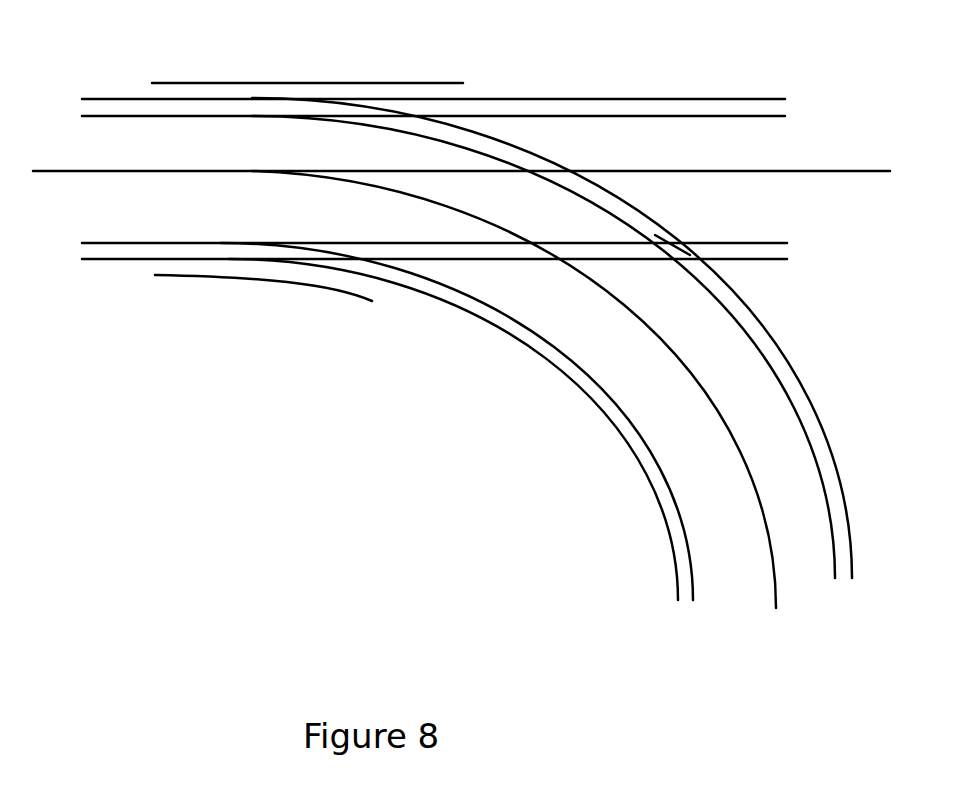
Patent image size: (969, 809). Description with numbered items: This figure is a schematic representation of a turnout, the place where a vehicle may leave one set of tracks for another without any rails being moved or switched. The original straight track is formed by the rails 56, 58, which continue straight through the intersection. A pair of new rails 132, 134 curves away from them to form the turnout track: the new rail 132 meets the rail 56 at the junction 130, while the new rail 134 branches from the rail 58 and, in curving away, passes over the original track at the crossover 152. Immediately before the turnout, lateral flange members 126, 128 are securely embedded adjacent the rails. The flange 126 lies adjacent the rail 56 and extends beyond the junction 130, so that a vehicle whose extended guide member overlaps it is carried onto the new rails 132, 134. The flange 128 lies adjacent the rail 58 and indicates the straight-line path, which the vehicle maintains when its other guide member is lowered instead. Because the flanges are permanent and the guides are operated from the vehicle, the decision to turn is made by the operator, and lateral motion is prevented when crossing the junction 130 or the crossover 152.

The rail 58 is at (105, 99).
The rail 56 is at (113, 260).
The lateral flange member 128 is at (307, 83).
The junction 130 is at (281, 250).
The lateral flange member 126 is at (290, 283).
The new rail 132 is at (583, 385).
The new rail 134 is at (778, 362).
The crossover 152 is at (672, 247).